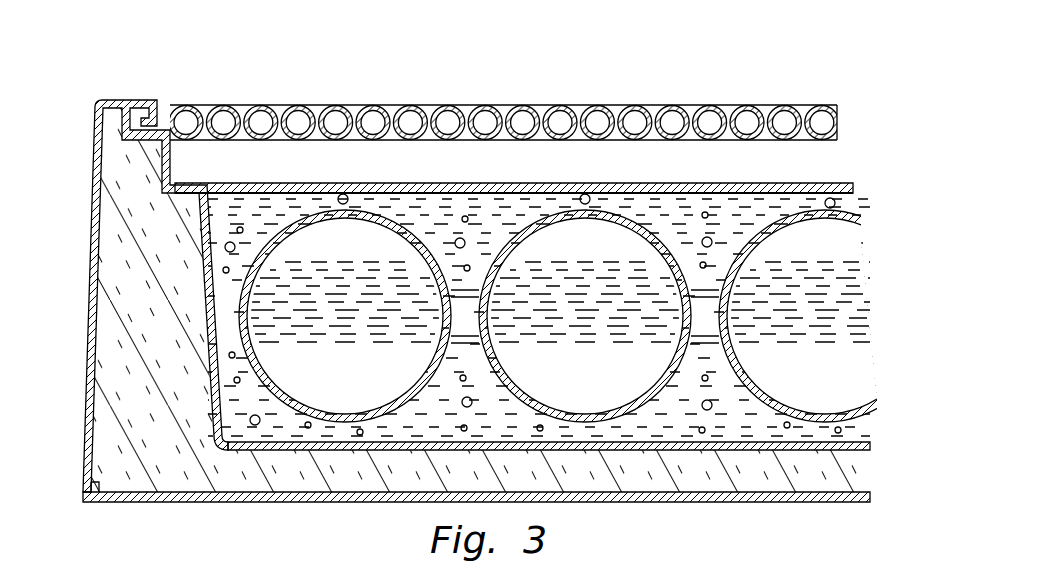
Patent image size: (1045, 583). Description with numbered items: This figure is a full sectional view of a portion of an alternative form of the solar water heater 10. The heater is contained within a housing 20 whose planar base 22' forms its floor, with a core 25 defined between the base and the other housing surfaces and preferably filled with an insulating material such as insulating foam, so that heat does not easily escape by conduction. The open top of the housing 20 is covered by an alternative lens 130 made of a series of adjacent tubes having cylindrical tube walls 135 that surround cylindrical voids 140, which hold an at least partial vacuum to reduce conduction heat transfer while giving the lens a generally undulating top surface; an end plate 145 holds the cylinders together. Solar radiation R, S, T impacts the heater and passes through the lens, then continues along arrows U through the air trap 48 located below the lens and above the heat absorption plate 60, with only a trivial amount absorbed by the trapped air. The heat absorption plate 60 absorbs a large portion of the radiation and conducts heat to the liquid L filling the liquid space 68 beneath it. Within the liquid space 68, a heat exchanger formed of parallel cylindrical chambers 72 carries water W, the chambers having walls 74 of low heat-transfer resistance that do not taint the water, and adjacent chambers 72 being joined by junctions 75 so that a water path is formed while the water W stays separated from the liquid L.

The solar water heater 10 is at (119, 62).
The housing 20 is at (88, 318).
The base 22' is at (546, 503).
The core 25 is at (162, 354).
The air trap 48 is at (245, 174).
The heat absorption plate 60 is at (855, 184).
The liquid space 68 is at (268, 222).
The chambers 72 is at (345, 379).
The walls 74 is at (285, 216).
The junctions 75 is at (445, 335).
The alternative lens 130 is at (233, 76).
The cylindrical tube walls 135 is at (340, 103).
The cylindrical voids 140 is at (754, 118).
The end plate 145 is at (811, 102).
The liquid L is at (442, 229).
The water W is at (395, 339).
The solar radiation U is at (434, 168).
The solar radiation R is at (440, 97).
The solar radiation S is at (527, 95).
The solar radiation T is at (612, 96).